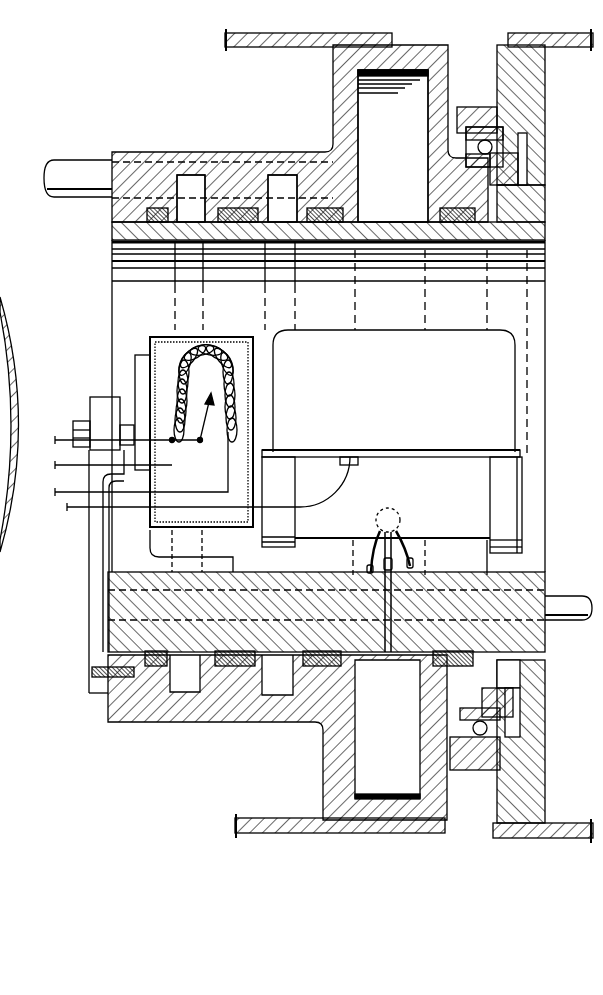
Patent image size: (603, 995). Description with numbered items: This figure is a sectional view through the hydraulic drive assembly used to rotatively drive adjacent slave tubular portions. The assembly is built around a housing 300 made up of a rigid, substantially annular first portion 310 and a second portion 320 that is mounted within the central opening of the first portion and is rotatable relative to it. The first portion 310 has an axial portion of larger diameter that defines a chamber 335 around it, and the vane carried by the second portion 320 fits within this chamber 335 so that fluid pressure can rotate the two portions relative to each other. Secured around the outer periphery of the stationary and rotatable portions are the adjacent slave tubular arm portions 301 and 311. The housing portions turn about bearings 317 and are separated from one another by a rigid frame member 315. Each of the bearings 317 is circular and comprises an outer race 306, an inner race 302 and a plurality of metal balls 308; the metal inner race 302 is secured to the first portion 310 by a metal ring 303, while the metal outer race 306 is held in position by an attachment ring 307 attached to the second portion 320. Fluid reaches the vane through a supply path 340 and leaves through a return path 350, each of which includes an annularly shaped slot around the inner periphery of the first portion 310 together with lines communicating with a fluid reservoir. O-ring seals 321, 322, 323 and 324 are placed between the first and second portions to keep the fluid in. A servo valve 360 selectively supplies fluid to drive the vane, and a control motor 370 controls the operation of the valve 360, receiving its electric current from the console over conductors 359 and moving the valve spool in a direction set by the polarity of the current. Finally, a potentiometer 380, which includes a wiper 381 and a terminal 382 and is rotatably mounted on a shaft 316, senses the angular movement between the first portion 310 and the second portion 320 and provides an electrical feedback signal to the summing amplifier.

The housing 300 is at (128, 139).
The slave tubular arm portion 301 is at (275, 49).
The inner race 302 is at (517, 172).
The metal ring 303 is at (540, 212).
The outer race 306 is at (505, 140).
The attachment ring 307 is at (497, 113).
The metal balls 308 is at (516, 148).
The first portion 310 is at (232, 151).
The slave tubular arm portion 311 is at (568, 48).
The rigid frame member 315 is at (100, 618).
The shaft 316 is at (81, 420).
The bearings 317 is at (530, 114).
The second portion 320 is at (536, 90).
The O-ring seal 321 is at (110, 243).
The O-ring seal 322 is at (238, 244).
The O-ring seal 323 is at (322, 244).
The O-ring seal 324 is at (458, 244).
The chamber 335 is at (372, 125).
The supply path 340 is at (287, 183).
The return path 350 is at (192, 183).
The conductors 359 is at (80, 512).
The servo valve 360 is at (455, 498).
The control motor 370 is at (418, 378).
The potentiometer 380 is at (160, 334).
The wiper 381 is at (64, 438).
The terminal 382 is at (70, 507).